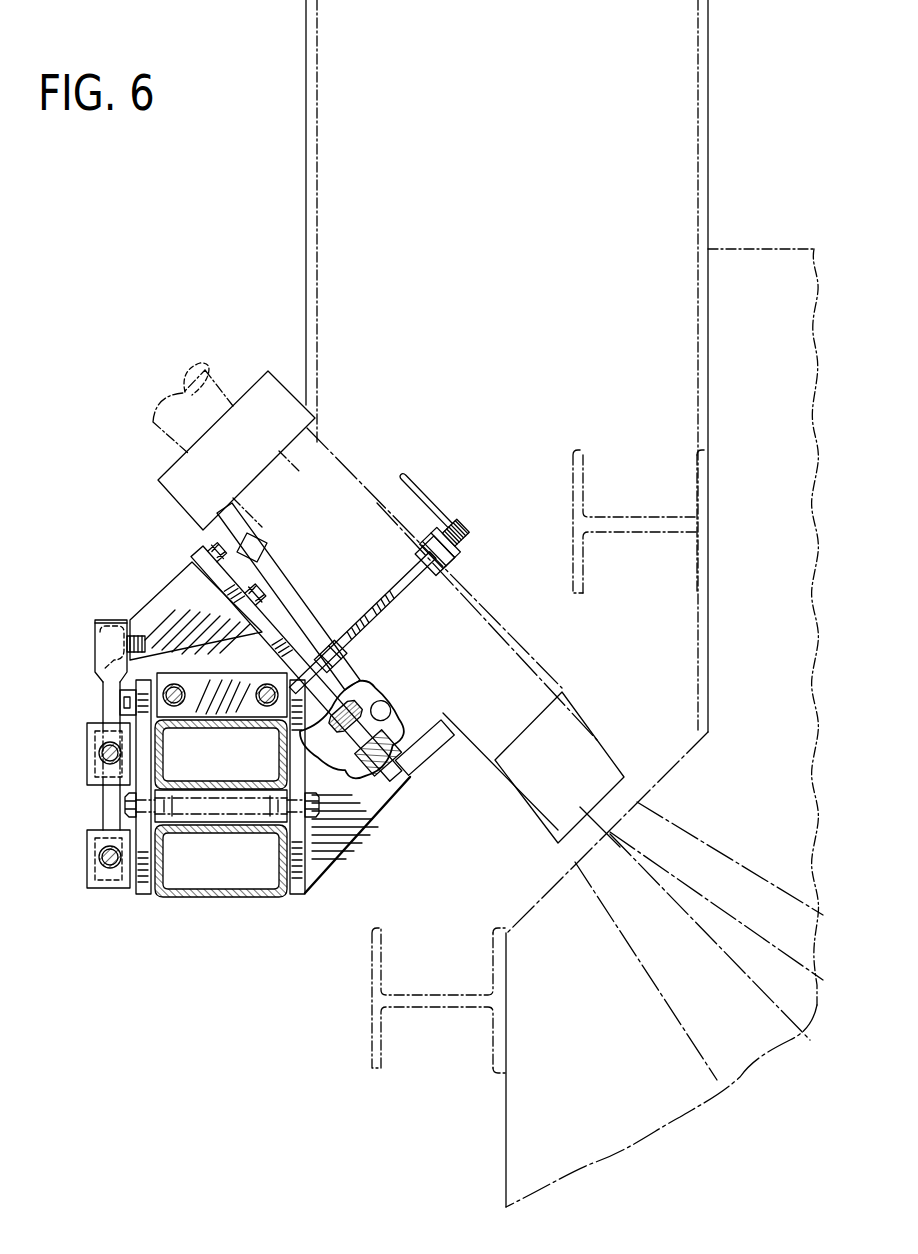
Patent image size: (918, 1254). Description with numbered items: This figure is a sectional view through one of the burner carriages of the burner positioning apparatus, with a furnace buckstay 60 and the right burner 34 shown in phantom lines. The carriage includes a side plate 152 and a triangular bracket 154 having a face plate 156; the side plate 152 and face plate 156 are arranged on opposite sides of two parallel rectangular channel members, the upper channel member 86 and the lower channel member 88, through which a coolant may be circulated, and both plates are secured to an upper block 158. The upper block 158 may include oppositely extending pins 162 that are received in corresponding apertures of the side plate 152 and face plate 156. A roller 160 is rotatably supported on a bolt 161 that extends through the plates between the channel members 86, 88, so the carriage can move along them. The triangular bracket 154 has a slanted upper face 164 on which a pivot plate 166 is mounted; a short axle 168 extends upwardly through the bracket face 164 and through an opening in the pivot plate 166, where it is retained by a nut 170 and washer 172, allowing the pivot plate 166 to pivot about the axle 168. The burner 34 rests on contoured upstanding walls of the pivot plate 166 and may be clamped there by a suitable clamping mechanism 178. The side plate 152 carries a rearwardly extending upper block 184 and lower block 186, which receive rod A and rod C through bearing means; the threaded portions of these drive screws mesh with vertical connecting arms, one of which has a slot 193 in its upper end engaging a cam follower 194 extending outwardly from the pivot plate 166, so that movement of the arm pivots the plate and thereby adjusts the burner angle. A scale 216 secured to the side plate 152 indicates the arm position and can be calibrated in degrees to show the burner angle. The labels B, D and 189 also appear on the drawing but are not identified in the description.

The buckstay 60 is at (305, 170).
The right burner 34 is at (340, 455).
The side plate 152 is at (146, 903).
The face plate 156 is at (299, 895).
The upper block 158 is at (228, 690).
The bolt B is at (174, 706).
The bolt D is at (267, 706).
The upper channel member 86 is at (196, 786).
The lower channel member 88 is at (236, 899).
The roller 160 is at (224, 812).
The bolt 161 is at (124, 803).
The vertical link bar 189 is at (110, 818).
The upper block 184 is at (88, 726).
The rod A is at (100, 753).
The lower block 186 is at (92, 890).
The rod C is at (100, 857).
The cam follower 194 is at (96, 633).
The slot 193 is at (126, 644).
The scale 216 is at (121, 700).
The pivot plate 166 is at (200, 558).
The pin 162 is at (303, 662).
The clamping mechanism 178 is at (465, 546).
The nut 170 is at (377, 700).
The washer 172 is at (403, 722).
The short axle 168 is at (334, 770).
The slanted upper face 164 is at (404, 790).
The triangular bracket 154 is at (360, 815).